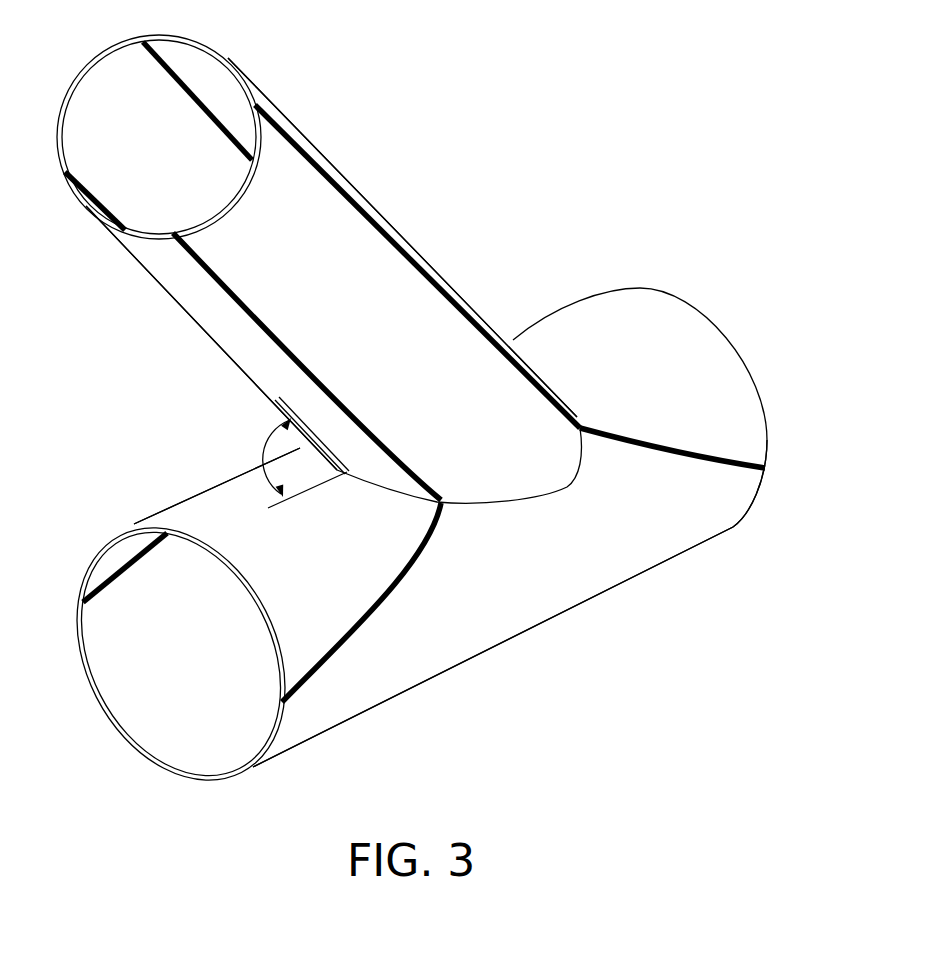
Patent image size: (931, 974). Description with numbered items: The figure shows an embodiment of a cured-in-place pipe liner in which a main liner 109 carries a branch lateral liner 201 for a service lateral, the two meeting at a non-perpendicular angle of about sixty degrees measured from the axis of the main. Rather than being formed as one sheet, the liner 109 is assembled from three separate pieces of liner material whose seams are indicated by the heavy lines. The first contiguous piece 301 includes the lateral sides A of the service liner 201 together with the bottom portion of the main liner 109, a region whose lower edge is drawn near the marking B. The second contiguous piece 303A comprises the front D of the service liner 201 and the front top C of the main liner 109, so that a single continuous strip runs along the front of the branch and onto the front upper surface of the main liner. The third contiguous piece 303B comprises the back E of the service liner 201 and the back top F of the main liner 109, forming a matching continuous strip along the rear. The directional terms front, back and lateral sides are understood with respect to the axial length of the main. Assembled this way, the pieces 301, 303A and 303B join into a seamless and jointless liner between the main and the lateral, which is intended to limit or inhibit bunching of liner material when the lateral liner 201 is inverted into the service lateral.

The first contiguous piece 301 is at (580, 563).
The lateral liner 201 is at (130, 248).
The main liner 109 is at (637, 287).
The second contiguous piece 303A is at (233, 347).
The third contiguous piece 303B is at (580, 332).
The lateral sides A is at (123, 92).
The lower edge line of main pipe B is at (440, 650).
The front top C is at (170, 522).
The front D is at (188, 308).
The back E is at (390, 226).
The back top F is at (703, 373).